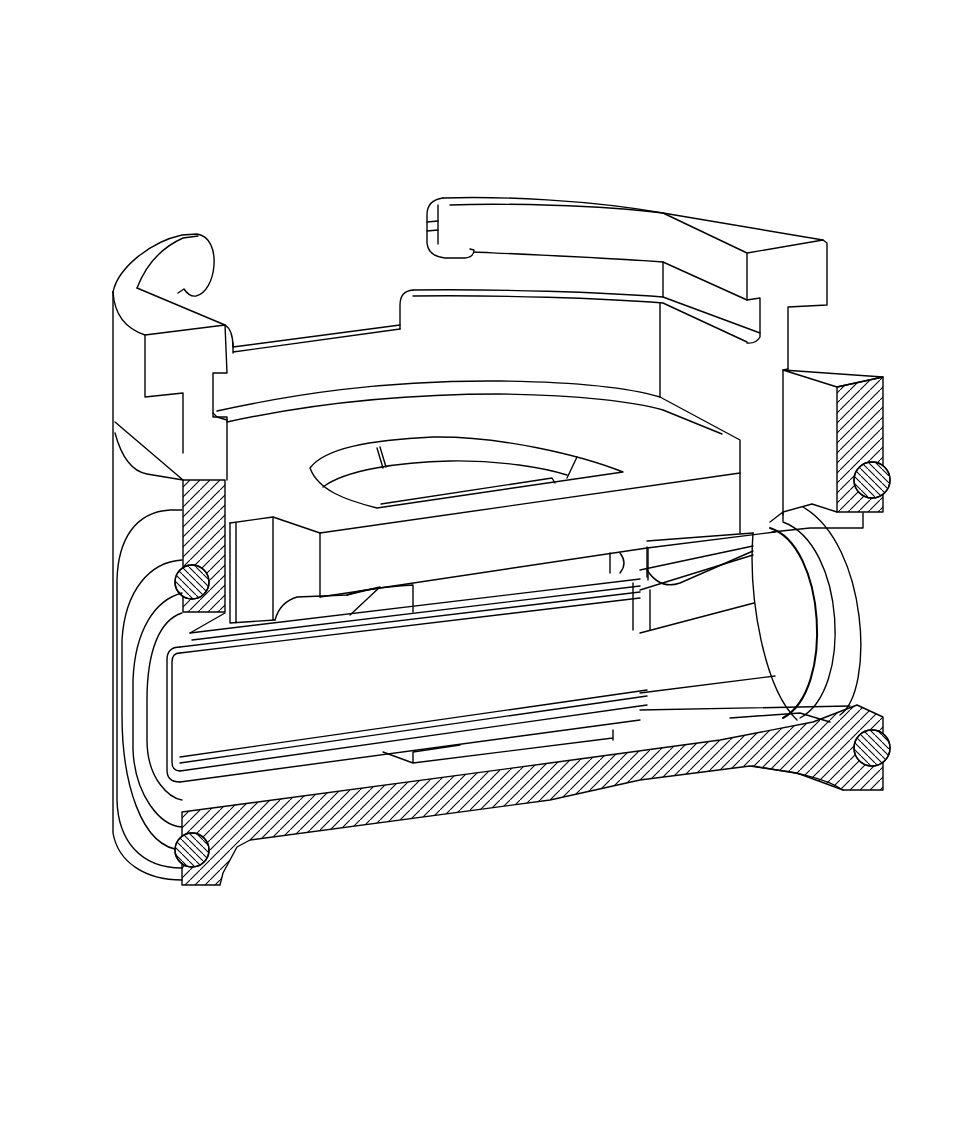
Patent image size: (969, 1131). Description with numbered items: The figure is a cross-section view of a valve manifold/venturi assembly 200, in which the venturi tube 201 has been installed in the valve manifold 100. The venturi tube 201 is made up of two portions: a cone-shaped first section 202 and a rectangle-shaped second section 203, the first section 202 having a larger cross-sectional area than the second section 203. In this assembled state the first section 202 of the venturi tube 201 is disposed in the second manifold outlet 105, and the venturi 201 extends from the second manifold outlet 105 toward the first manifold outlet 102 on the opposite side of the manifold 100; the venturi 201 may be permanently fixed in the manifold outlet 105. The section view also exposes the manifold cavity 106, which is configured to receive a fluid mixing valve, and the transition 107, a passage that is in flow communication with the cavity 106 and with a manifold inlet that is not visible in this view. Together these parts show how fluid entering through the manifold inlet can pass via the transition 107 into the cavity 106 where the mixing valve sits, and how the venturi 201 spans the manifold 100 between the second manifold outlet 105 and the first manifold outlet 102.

The assembly 200 is at (820, 34).
The manifold 100 is at (522, 166).
The transition 107 is at (410, 482).
The manifold cavity 106 is at (90, 252).
The second manifold outlet 105 is at (850, 589).
The first manifold outlet 102 is at (100, 743).
The venturi tube 201 is at (332, 765).
The first section 202 is at (797, 663).
The second section 203 is at (182, 723).